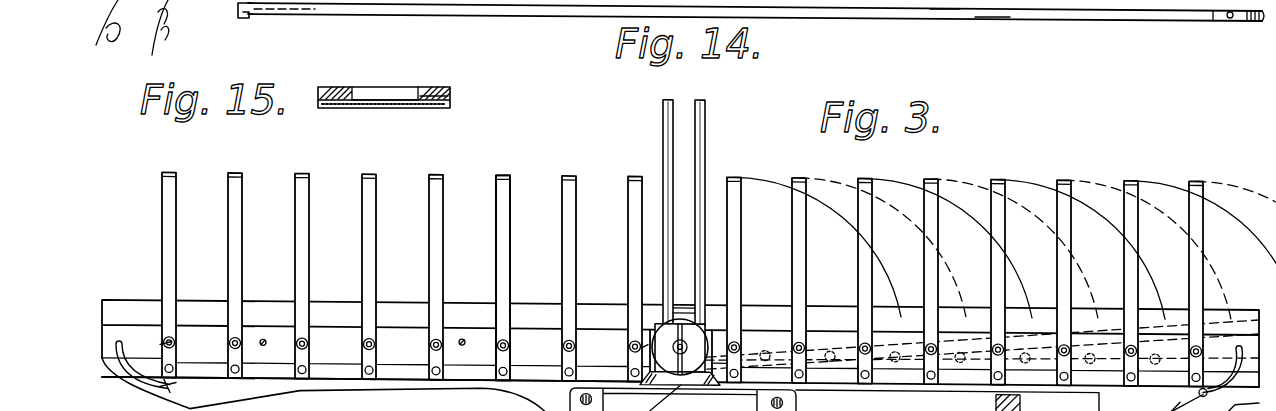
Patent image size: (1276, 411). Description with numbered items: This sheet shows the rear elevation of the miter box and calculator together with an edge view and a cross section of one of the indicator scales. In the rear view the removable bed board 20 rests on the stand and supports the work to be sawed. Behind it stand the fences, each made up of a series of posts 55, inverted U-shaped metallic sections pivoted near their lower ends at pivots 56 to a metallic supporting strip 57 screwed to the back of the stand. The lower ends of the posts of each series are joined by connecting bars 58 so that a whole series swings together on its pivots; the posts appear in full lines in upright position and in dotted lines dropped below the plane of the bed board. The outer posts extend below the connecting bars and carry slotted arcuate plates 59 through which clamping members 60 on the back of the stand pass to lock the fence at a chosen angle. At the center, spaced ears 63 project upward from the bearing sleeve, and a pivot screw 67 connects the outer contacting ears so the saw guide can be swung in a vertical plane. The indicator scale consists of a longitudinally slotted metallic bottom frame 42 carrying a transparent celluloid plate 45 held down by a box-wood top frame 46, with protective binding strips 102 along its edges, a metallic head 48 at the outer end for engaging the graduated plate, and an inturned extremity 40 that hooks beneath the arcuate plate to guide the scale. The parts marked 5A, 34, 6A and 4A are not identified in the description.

In FIG. 3, the bed board 20 is at (395, 314).
In FIG. 3, the posts 55 is at (367, 232).
In FIG. 3, the rake tooth 5A is at (519, 256).
In FIG. 3, the pivots 56 is at (500, 333).
In FIG. 3, the metallic supporting strip 57 is at (263, 336).
In FIG. 3, the connecting bars 58 is at (388, 374).
In FIG. 3, the slotted segmental or arcuate plates 59 is at (126, 341).
In FIG. 3, the bracket 34 is at (159, 309).
In FIG. 3, the clamping members 60 is at (172, 365).
In FIG. 3, the spaced ears 63 is at (652, 317).
In FIG. 3, the arm 6A is at (684, 304).
In FIG. 3, the pivot screw 67 is at (688, 341).
In FIG. 14, the inturned outer extremity 40 is at (231, 12).
In FIG. 14, the metallic heads 48 is at (250, 14).
In FIG. 14, the protective binding strips 102 is at (937, 13).
In FIG. 15, the protective binding strips 102 is at (451, 97).
In FIG. 14, the metallic binding or bottom frame 42 is at (992, 18).
In FIG. 15, the metallic binding or bottom frame 42 is at (439, 108).
In FIG. 14, the pin 4A is at (1229, 20).
In FIG. 15, the transparent plate 45 is at (373, 98).
In FIG. 15, the top frame 46 is at (433, 92).